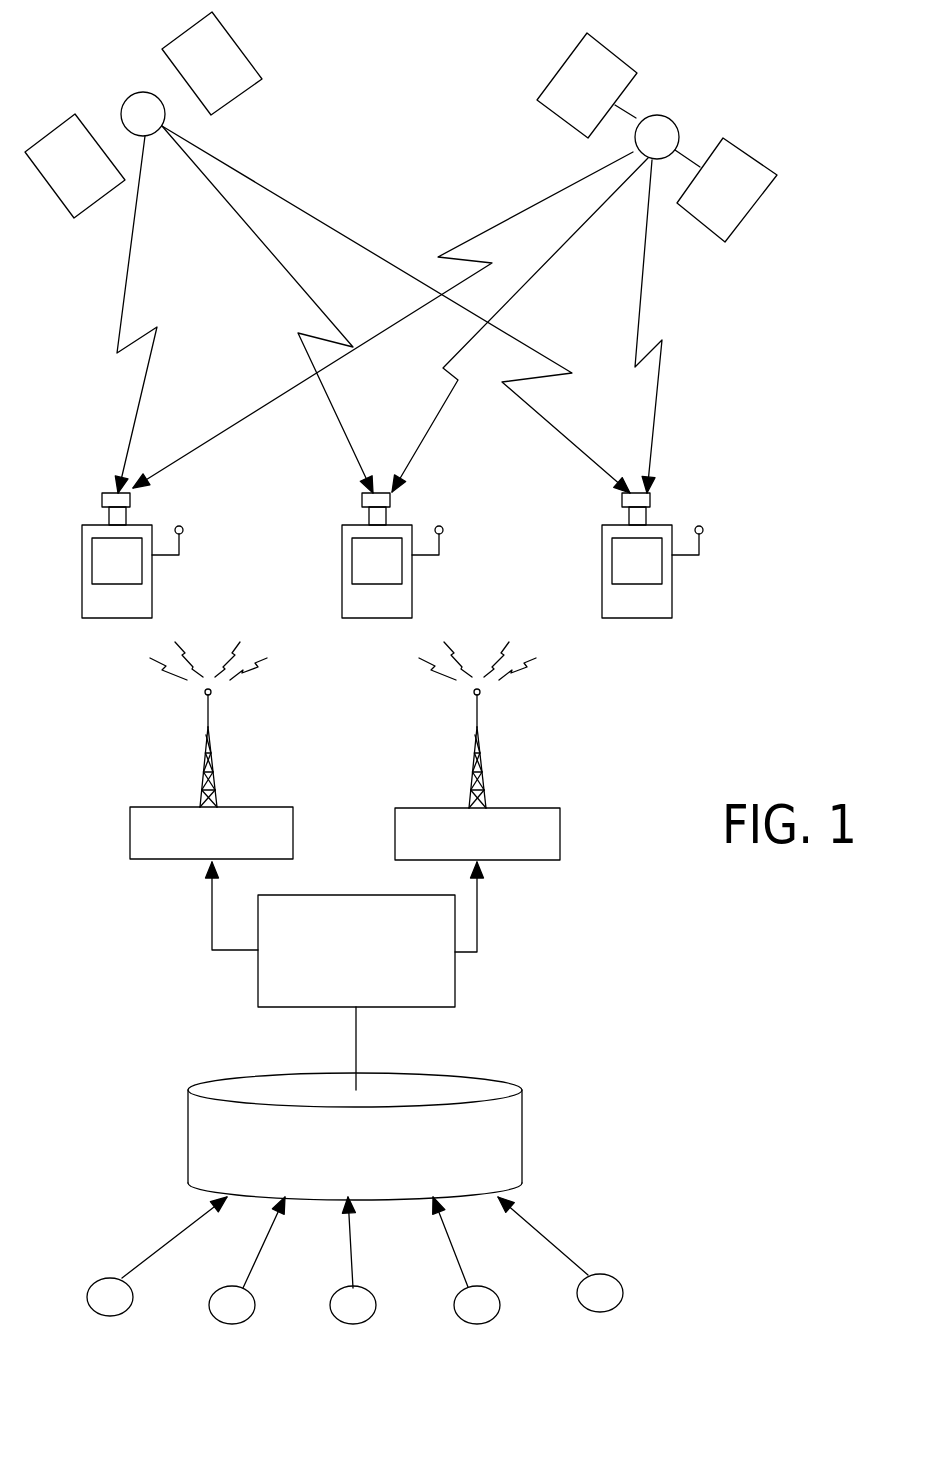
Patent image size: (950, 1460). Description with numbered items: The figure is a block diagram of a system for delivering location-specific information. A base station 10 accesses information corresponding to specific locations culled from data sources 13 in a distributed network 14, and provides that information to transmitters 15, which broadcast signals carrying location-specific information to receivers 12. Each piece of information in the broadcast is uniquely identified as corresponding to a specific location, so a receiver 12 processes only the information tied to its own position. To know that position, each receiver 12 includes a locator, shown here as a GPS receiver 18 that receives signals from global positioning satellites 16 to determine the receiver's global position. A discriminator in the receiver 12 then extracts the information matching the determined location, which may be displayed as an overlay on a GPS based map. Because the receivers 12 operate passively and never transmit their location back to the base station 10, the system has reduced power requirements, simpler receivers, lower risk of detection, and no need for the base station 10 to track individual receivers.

The base station 10 is at (455, 978).
The receiver 12 is at (82, 572).
The data source 13 is at (93, 1280).
The distributed network 14 is at (522, 1137).
The transmitter 15 is at (130, 813).
The global positioning satellite 16 is at (126, 95).
The GPS receiver 18 is at (132, 500).